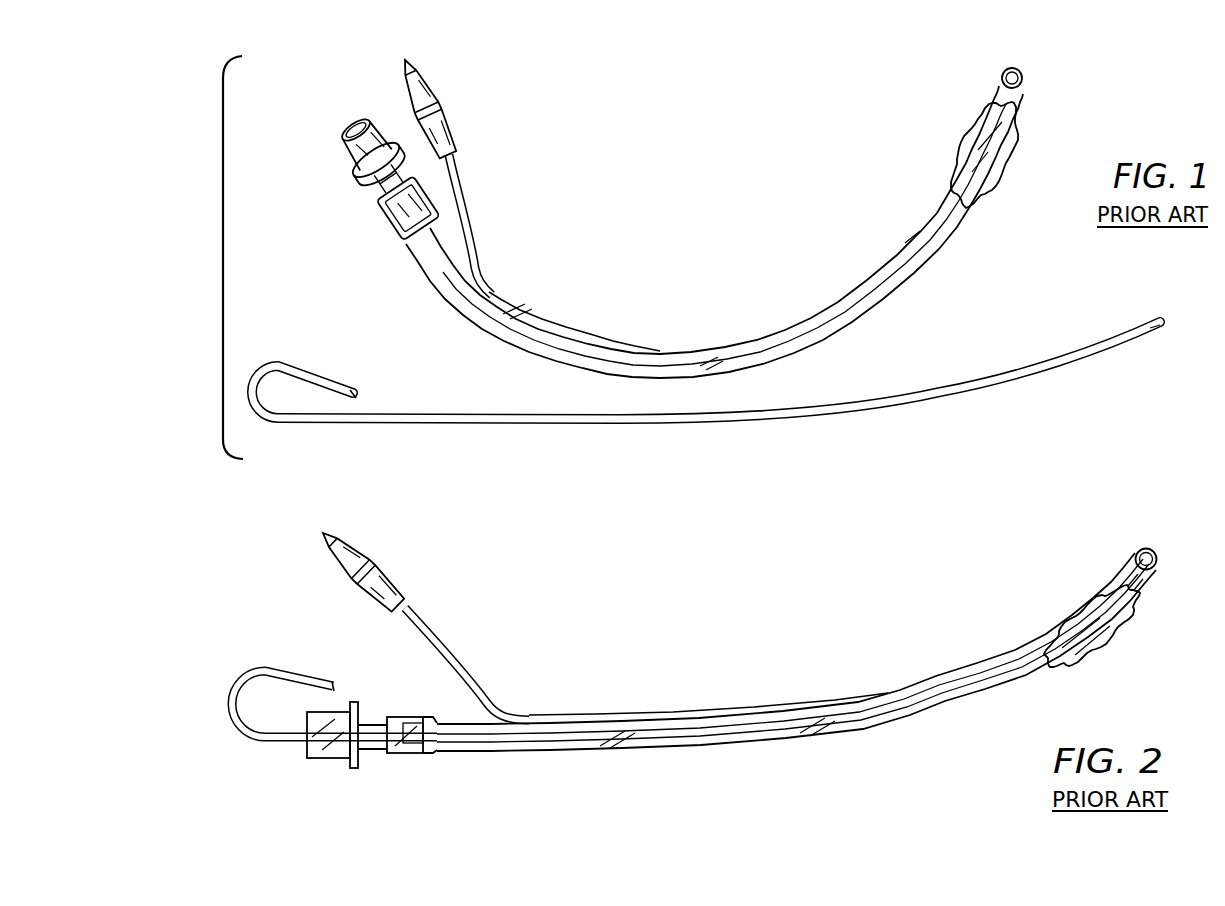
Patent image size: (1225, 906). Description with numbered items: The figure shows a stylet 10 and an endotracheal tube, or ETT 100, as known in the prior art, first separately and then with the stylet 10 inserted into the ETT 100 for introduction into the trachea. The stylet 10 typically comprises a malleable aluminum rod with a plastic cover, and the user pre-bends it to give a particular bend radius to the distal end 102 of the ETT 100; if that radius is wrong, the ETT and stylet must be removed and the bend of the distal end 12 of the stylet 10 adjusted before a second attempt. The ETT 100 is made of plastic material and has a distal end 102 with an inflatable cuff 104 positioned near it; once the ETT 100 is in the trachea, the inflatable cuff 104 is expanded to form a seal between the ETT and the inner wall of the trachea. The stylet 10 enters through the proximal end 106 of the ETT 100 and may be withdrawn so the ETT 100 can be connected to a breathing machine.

In FIG. 1, the stylet 10 is at (425, 418).
In FIG. 2, the stylet 10 is at (265, 734).
In FIG. 1, the distal end of stylet 12 is at (1157, 318).
In FIG. 2, the distal end of stylet 12 is at (1142, 580).
In FIG. 1, the ETT 100 is at (454, 291).
In FIG. 1, the distal end 102 is at (1002, 88).
In FIG. 2, the distal end 102 is at (1134, 559).
In FIG. 1, the inflatable cuff 104 is at (968, 143).
In FIG. 2, the inflatable cuff 104 is at (1064, 620).
In FIG. 1, the proximal end 106 is at (392, 217).
In FIG. 2, the proximal end 106 is at (413, 755).